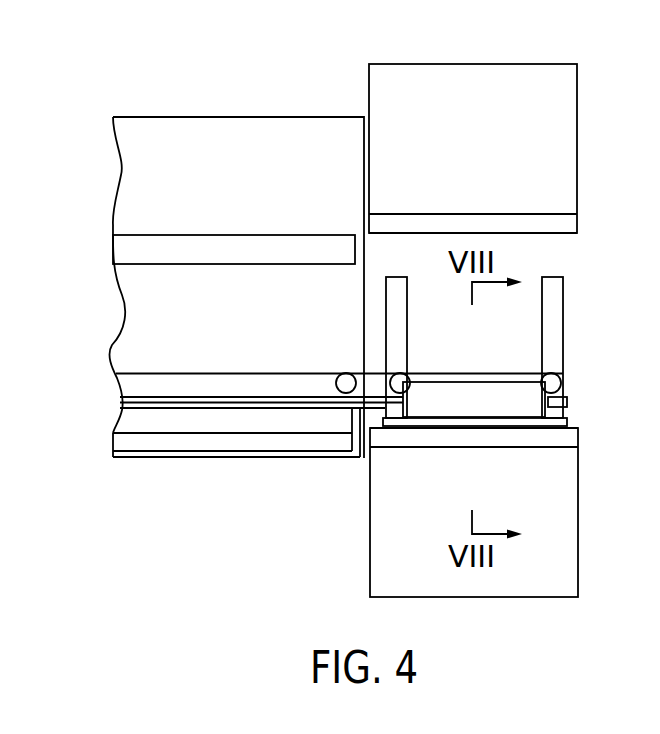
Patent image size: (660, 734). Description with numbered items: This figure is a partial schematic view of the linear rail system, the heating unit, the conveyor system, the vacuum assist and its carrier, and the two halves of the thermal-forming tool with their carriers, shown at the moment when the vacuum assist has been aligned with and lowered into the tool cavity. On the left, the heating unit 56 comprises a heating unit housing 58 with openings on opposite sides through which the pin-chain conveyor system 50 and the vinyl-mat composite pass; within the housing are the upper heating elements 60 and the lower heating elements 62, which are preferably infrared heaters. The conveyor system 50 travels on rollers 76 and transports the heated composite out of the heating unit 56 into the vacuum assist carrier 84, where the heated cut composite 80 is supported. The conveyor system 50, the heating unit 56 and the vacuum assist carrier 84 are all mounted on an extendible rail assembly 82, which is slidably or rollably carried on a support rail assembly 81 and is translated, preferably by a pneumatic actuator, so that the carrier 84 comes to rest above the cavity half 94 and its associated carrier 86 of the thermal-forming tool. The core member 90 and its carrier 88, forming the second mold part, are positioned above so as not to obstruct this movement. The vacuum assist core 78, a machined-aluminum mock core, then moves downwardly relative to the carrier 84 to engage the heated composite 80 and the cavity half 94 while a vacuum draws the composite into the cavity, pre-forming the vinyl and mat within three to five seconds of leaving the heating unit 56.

The heating unit 56 is at (147, 101).
The heating unit housing 58 is at (223, 116).
The upper heating elements 60 is at (257, 235).
The pin-chain conveyor system 50 is at (284, 371).
The rollers 76 is at (345, 373).
The vacuum assist core 78 is at (447, 382).
The vacuum assist carrier 84 is at (563, 318).
The core carrier 88 is at (577, 118).
The core member 90 is at (577, 221).
The heated cut composite 80 is at (421, 424).
The cavity half 94 is at (578, 437).
The cavity carrier 86 is at (578, 543).
The support rail assembly 81 is at (173, 422).
The lower heating elements 62 is at (252, 446).
The extendible rail assembly 82 is at (352, 418).